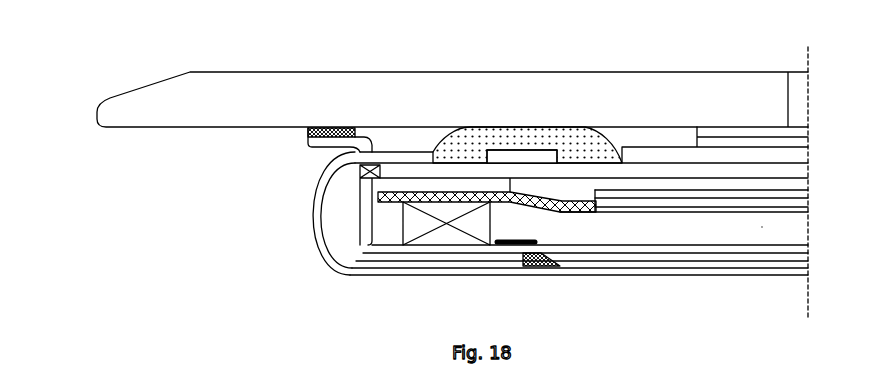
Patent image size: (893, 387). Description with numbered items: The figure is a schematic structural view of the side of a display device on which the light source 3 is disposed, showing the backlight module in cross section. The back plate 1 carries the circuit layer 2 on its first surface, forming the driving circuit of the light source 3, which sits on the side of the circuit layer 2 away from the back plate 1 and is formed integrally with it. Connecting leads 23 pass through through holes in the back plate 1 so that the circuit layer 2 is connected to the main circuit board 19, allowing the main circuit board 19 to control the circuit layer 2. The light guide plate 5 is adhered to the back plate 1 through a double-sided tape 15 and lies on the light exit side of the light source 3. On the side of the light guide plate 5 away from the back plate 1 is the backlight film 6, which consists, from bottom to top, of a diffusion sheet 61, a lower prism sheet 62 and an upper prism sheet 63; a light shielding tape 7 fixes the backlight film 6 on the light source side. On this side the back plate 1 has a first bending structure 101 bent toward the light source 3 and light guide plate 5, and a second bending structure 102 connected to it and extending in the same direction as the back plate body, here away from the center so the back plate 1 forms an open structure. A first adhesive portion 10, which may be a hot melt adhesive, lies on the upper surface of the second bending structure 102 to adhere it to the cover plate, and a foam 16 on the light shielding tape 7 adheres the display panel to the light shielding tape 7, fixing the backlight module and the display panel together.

The back plate 1 is at (377, 255).
The first bending structure 101 is at (362, 214).
The second bending structure 102 is at (328, 145).
The first adhesive portion 10 is at (330, 130).
The foam 16 is at (432, 190).
The light source 3 is at (415, 233).
The circuit layer 2 is at (458, 245).
The connecting leads 23 is at (527, 255).
The double-sided tape 15 is at (535, 244).
The main circuit board 19 is at (640, 273).
The light shielding tape 7 is at (627, 205).
The light guide plate 5 is at (762, 227).
The backlight film 6 is at (731, 182).
The diffusion sheet 61 is at (717, 202).
The lower prism sheet 62 is at (788, 199).
The upper prism sheet 63 is at (788, 191).